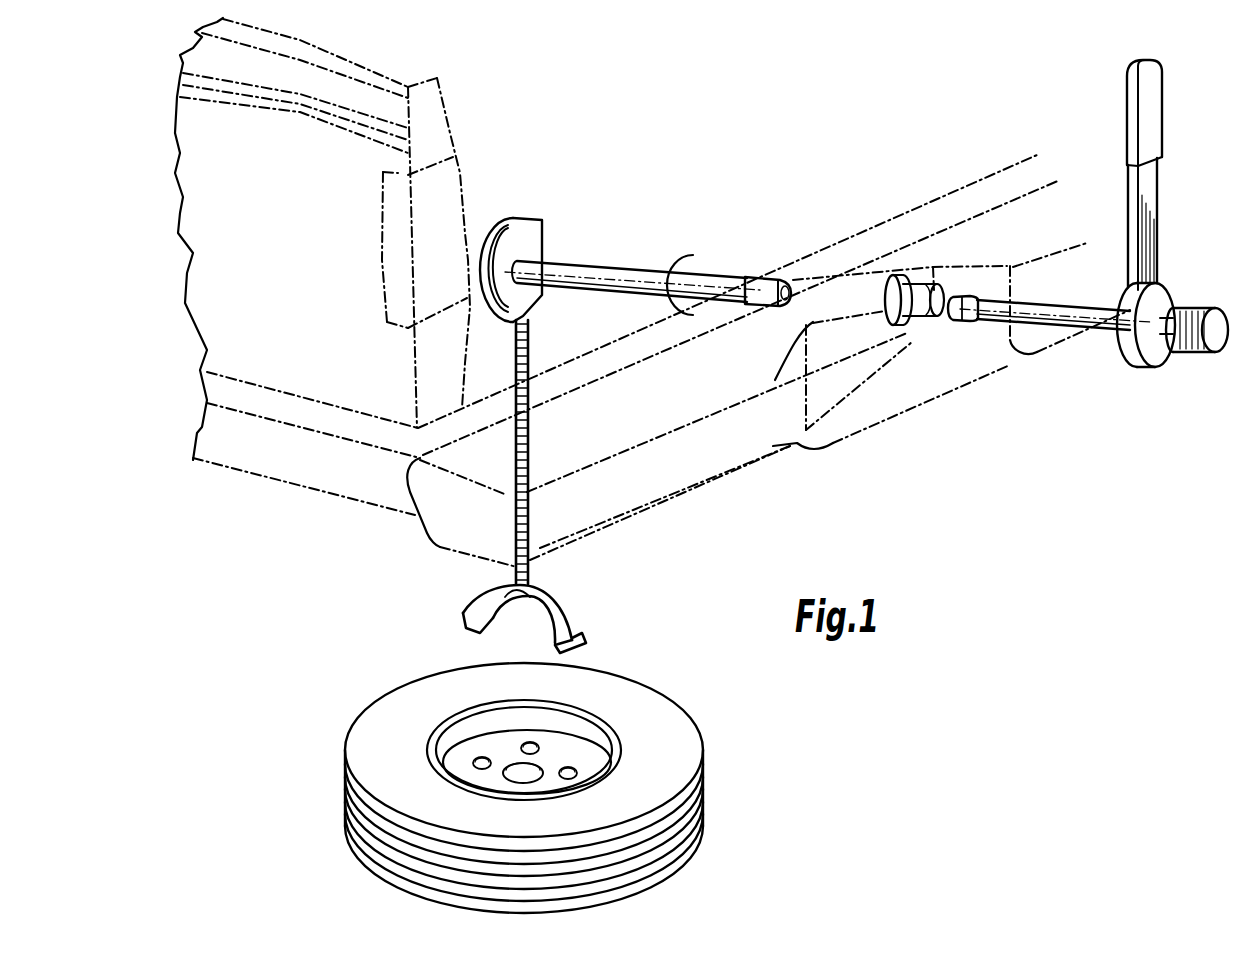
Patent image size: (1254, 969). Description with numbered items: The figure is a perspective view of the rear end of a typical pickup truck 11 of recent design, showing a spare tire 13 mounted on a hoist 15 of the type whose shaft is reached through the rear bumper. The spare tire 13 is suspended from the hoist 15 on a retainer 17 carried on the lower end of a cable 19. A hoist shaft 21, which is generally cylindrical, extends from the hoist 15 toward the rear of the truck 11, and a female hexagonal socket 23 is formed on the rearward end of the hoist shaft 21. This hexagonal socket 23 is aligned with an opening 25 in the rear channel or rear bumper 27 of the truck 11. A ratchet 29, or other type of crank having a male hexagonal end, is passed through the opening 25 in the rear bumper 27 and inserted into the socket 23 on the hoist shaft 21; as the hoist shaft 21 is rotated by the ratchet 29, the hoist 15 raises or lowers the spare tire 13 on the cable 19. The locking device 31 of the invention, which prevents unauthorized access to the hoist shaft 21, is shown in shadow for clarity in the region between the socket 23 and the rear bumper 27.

The pickup truck 11 is at (278, 363).
The spare tire 13 is at (412, 694).
The hoist 15 is at (504, 217).
The retainer 17 is at (557, 604).
The cable 19 is at (530, 450).
The hoist shaft 21 is at (630, 262).
The female hexagonal socket 23 is at (767, 278).
The opening 25 is at (913, 328).
The rear bumper 27 is at (706, 457).
The ratchet 29 is at (1090, 336).
The locking device 31 is at (852, 272).